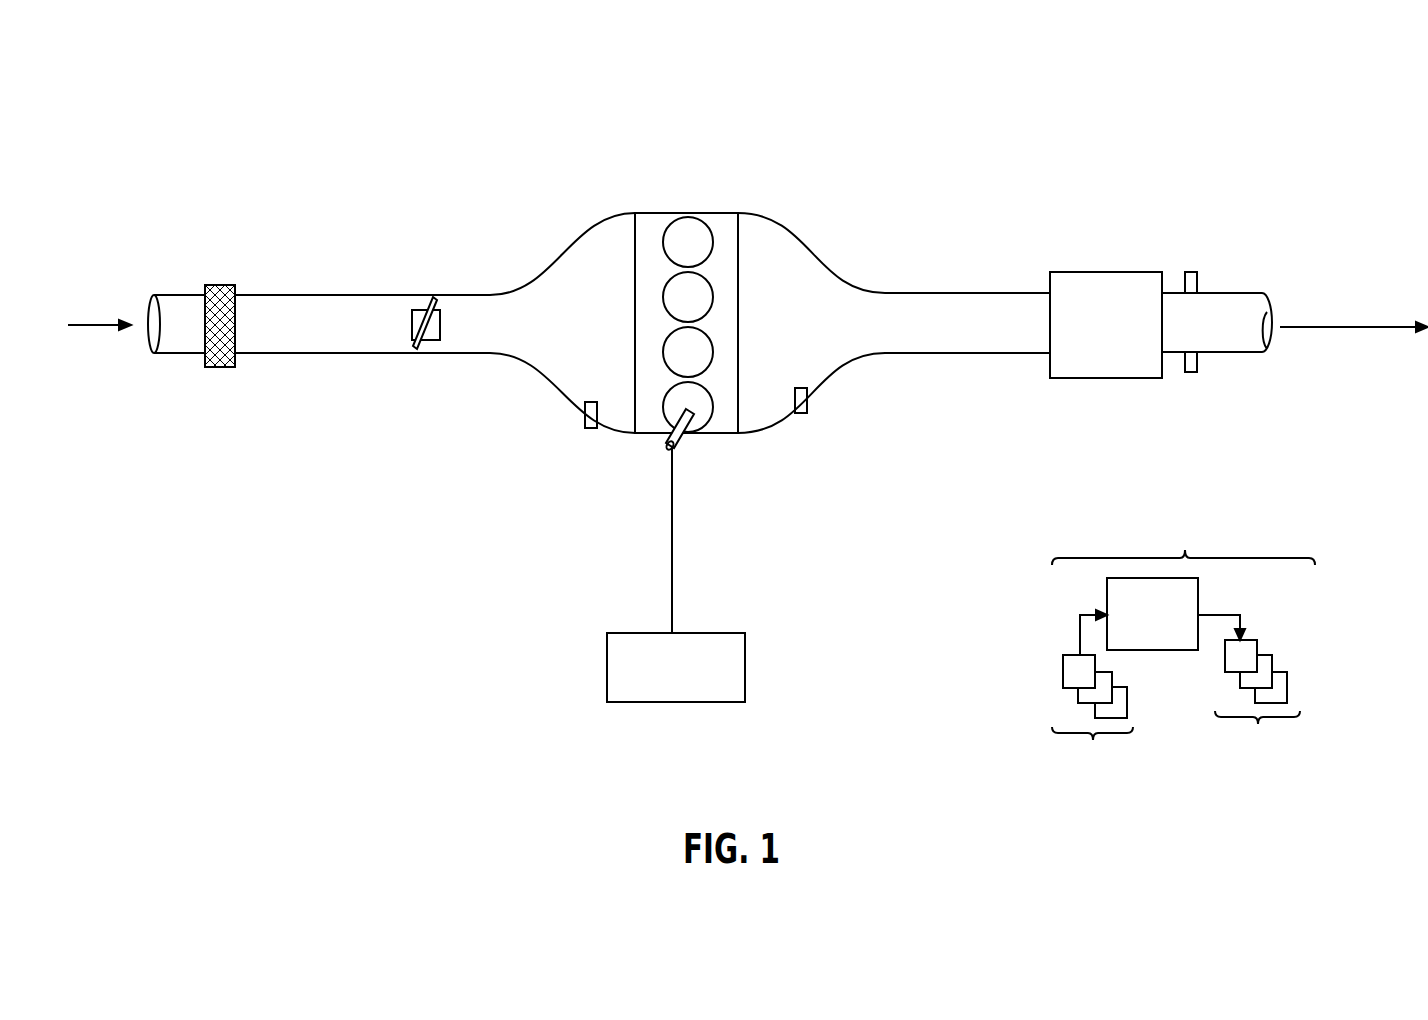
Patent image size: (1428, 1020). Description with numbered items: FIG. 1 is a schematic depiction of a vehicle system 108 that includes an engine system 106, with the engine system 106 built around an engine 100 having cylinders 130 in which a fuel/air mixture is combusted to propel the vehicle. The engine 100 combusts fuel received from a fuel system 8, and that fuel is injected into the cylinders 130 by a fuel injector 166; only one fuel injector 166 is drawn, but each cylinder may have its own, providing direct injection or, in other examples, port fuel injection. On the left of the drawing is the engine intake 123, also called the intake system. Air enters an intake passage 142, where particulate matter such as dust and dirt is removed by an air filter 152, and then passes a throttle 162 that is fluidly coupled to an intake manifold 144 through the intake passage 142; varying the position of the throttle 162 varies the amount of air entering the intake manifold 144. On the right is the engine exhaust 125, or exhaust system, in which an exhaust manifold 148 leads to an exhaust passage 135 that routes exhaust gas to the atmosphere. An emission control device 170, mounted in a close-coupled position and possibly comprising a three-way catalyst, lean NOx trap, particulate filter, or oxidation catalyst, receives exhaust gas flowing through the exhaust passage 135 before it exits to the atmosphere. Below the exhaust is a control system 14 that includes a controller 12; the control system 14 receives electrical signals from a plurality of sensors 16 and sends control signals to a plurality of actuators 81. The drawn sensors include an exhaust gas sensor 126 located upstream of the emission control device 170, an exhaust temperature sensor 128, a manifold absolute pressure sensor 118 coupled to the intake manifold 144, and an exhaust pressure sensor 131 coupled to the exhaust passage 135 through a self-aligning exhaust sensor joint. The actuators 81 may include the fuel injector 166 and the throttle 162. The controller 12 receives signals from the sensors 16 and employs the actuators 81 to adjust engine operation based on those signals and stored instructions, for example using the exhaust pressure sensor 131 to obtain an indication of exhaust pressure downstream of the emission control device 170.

The fuel system 8 is at (710, 633).
The controller 12 is at (1152, 614).
The control system 14 is at (1183, 643).
The sensors 16 is at (1092, 697).
The actuators 81 is at (1249, 691).
The engine 100 is at (740, 303).
The engine system 106 is at (168, 218).
The vehicle system 108 is at (1362, 112).
The manifold absolute pressure (MAP) sensor 118 is at (585, 410).
The engine intake 123 is at (556, 238).
The engine exhaust 125 is at (862, 249).
The exhaust gas sensor 126 is at (807, 392).
The exhaust temperature sensor 128 is at (1191, 372).
The cylinders 130 is at (690, 216).
The exhaust pressure sensor 131 is at (1191, 272).
The exhaust passage 135 is at (925, 293).
The intake passage 142 is at (186, 356).
The intake manifold 144 is at (600, 337).
The exhaust manifold 148 is at (830, 337).
The air filter 152 is at (213, 285).
The throttle 162 is at (439, 325).
The fuel injector 166 is at (685, 437).
The emission control device 170 is at (1093, 272).